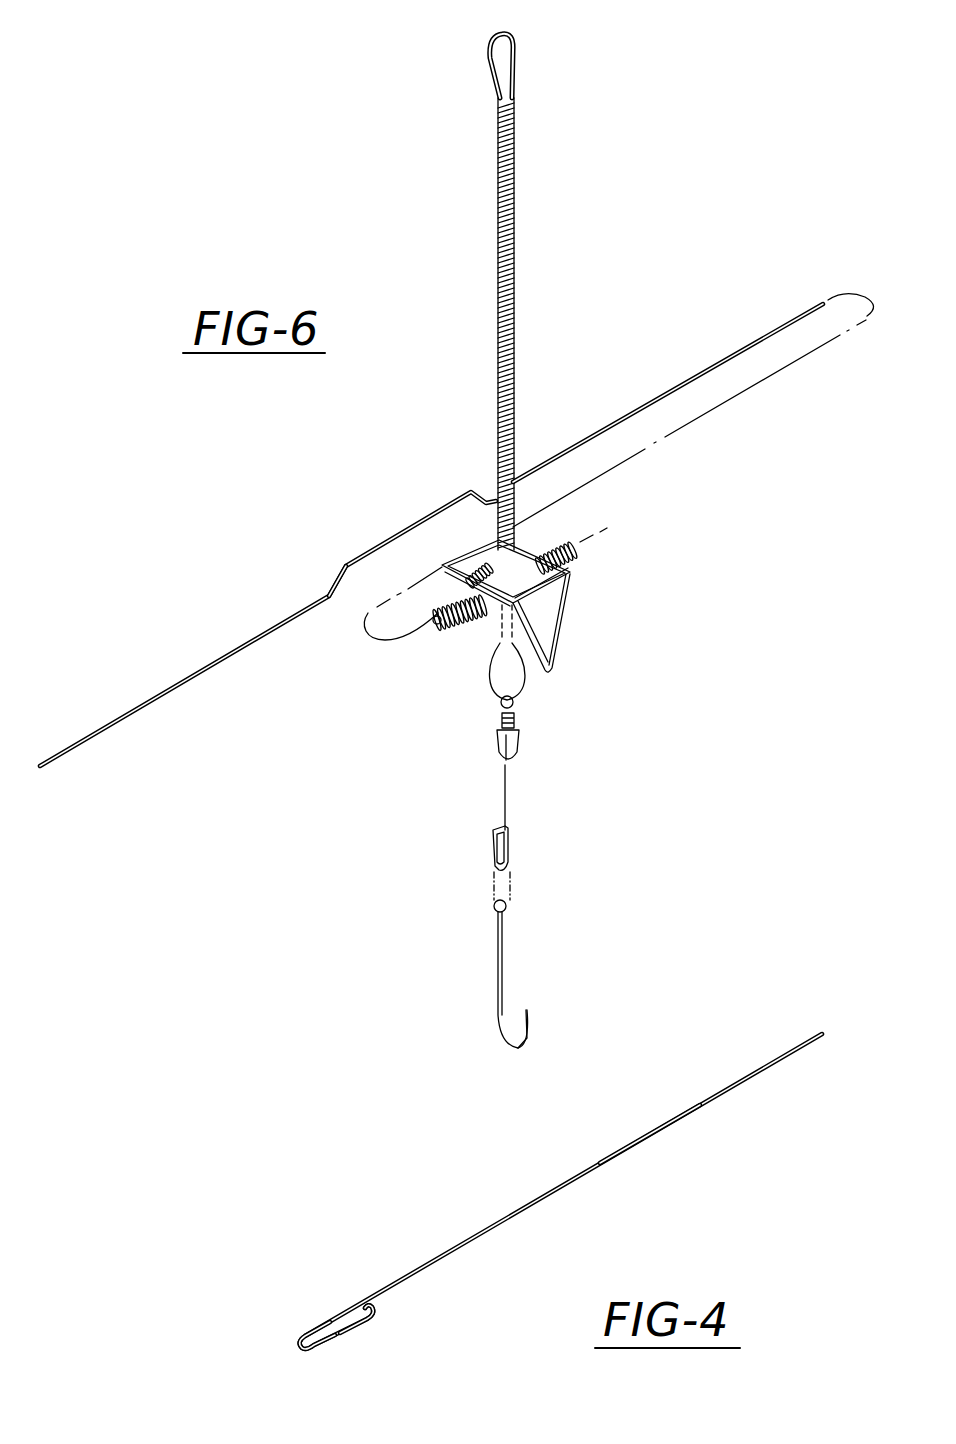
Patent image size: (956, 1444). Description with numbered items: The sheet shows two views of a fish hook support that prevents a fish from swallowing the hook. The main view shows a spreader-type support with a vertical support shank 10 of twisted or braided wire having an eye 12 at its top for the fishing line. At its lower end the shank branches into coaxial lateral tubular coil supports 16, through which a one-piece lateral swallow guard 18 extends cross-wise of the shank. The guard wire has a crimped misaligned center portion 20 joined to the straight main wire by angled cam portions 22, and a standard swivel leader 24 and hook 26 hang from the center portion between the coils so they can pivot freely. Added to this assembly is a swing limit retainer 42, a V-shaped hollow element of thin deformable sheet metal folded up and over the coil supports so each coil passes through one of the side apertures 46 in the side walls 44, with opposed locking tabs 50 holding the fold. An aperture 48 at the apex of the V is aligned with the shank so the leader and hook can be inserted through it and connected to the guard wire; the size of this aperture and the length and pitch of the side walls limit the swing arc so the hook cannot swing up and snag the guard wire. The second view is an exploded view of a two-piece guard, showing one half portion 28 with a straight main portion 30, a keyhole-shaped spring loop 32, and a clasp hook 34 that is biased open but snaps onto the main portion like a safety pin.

In FIG. 6, the vertical support shank 10 is at (513, 230).
In FIG. 6, the eye 12 is at (515, 43).
In FIG. 6, the lateral tubular coil supports 16 is at (560, 547).
In FIG. 6, the lateral swallow guard 18 is at (642, 408).
In FIG. 6, the misaligned center portion 20 is at (390, 542).
In FIG. 6, the angled cam portions 22 is at (337, 572).
In FIG. 6, the swivel leader 24 is at (516, 752).
In FIG. 6, the hook 26 is at (505, 960).
In FIG. 4, the swallow guard half portion 28 is at (708, 1075).
In FIG. 4, the straight main portion 30 is at (605, 1153).
In FIG. 4, the spring loop 32 is at (303, 1352).
In FIG. 4, the clasp hook 34 is at (378, 1316).
In FIG. 6, the swing limit retainer 42 is at (544, 577).
In FIG. 6, the side walls 44 is at (552, 620).
In FIG. 6, the side apertures 46 is at (482, 627).
In FIG. 6, the apex aperture 48 is at (497, 645).
In FIG. 6, the locking tabs 50 is at (443, 568).